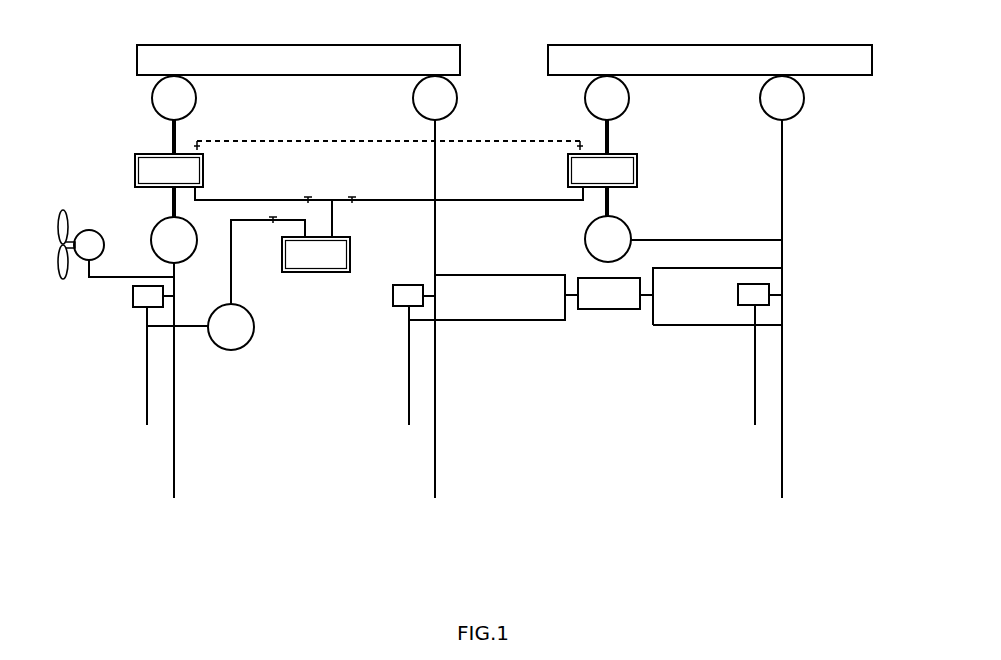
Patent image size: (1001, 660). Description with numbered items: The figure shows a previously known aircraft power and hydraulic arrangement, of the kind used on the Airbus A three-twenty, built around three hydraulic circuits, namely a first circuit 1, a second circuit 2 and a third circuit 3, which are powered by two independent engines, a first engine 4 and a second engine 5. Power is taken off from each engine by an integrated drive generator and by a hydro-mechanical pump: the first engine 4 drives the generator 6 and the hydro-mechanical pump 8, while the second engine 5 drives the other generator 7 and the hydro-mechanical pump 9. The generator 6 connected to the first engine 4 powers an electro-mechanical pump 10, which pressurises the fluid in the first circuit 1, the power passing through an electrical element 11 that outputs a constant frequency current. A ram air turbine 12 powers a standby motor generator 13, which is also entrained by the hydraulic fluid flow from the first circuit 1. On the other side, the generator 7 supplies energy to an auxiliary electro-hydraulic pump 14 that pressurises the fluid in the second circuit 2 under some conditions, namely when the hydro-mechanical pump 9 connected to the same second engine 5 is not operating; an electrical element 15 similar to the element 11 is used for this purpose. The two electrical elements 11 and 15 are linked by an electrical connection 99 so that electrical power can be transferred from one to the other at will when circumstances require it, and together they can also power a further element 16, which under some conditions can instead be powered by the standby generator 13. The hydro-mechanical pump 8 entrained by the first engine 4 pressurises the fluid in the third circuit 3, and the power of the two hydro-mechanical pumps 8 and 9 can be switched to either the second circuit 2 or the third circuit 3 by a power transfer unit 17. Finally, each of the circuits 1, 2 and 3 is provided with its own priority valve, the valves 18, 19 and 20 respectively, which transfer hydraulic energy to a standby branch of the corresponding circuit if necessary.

The first circuit 1 is at (166, 462).
The second circuit 2 is at (774, 462).
The third circuit 3 is at (427, 462).
The first engine 4 is at (340, 45).
The second engine 5 is at (638, 45).
The integrated drive generator 6 is at (152, 100).
The integrated drive generator 7 is at (630, 100).
The hydro-mechanical pump 8 is at (457, 92).
The hydro-mechanical pump 9 is at (805, 102).
The electro-mechanical pump 10 is at (150, 232).
The electrical element 11 is at (204, 174).
The ram air turbine 12 is at (63, 213).
The standby motor generator 13 is at (248, 336).
The auxiliary electro-hydraulic pump 14 is at (586, 232).
The electrical element 15 is at (640, 168).
The element 16 is at (352, 247).
The power transfer unit 17 is at (600, 312).
The priority valve 18 is at (140, 308).
The priority valve 19 is at (765, 308).
The priority valve 20 is at (393, 297).
The electrical connection 99 is at (310, 140).